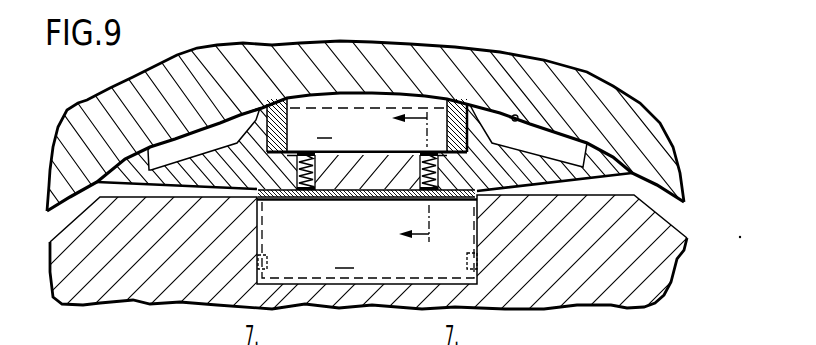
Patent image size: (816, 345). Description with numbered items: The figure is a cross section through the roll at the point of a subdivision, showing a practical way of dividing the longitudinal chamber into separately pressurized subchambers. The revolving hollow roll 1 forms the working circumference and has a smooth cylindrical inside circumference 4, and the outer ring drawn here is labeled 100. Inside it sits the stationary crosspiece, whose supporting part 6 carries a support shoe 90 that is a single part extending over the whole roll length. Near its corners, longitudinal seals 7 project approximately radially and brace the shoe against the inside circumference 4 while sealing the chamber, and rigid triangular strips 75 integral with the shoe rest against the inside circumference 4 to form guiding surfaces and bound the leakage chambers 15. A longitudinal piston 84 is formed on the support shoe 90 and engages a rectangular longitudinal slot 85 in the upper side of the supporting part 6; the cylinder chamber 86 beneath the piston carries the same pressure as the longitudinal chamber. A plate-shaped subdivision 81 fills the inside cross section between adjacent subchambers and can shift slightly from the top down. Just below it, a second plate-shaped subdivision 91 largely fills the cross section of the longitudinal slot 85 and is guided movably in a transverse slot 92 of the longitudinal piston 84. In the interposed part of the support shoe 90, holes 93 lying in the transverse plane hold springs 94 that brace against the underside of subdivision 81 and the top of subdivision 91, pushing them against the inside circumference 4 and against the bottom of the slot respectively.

The hollow roll 1 is at (486, 68).
The inside circumference 4 is at (516, 114).
The supporting part 6 is at (626, 262).
The longitudinal seals 7 is at (270, 113).
The leakage chambers 15 is at (167, 147).
The strips 75 is at (130, 170).
The subdivision 81 is at (381, 100).
The longitudinal piston 84 is at (388, 278).
The longitudinal slot 85 is at (268, 231).
The cylinder chamber 86 is at (322, 284).
The support shoe 90 is at (207, 160).
The subdivision 91 is at (367, 240).
The transverse slot 92 is at (466, 201).
The holes 93 is at (320, 172).
The springs 94 is at (308, 194).
The outer ring 100 is at (610, 74).